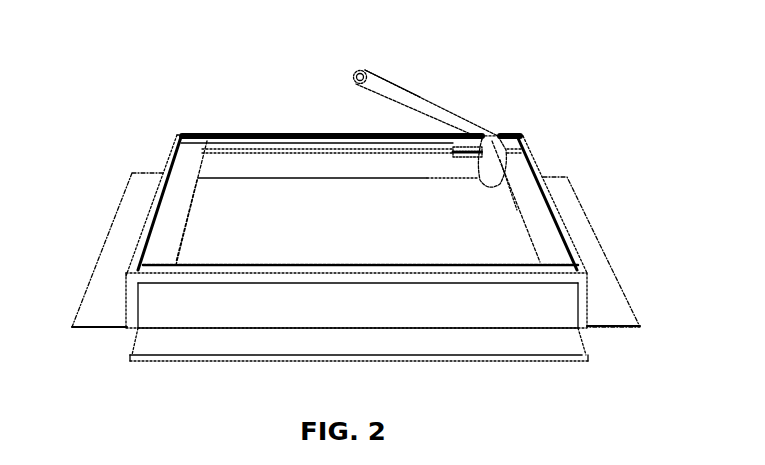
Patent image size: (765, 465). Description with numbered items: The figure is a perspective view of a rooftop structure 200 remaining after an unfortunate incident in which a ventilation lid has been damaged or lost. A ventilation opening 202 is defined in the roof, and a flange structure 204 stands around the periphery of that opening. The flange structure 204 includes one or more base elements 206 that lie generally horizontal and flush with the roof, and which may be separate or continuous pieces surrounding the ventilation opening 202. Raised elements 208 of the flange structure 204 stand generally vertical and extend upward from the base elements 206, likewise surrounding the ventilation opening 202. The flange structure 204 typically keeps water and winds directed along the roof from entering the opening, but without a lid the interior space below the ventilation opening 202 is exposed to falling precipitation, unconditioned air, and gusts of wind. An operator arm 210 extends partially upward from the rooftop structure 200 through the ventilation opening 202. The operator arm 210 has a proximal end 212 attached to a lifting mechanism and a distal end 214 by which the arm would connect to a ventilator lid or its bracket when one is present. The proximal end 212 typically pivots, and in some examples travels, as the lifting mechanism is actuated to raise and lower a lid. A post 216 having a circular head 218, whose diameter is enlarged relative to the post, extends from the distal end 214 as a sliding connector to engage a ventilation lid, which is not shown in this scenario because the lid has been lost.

The rooftop structure 200 is at (533, 64).
The ventilation opening 202 is at (313, 224).
The flange structure 204 is at (550, 159).
The base elements 206 is at (113, 243).
The raised elements 208 is at (165, 165).
The operator arm 210 is at (425, 102).
The proximal end 212 is at (498, 137).
The distal end 214 is at (372, 72).
The post 216 is at (355, 77).
The circular head 218 is at (358, 85).